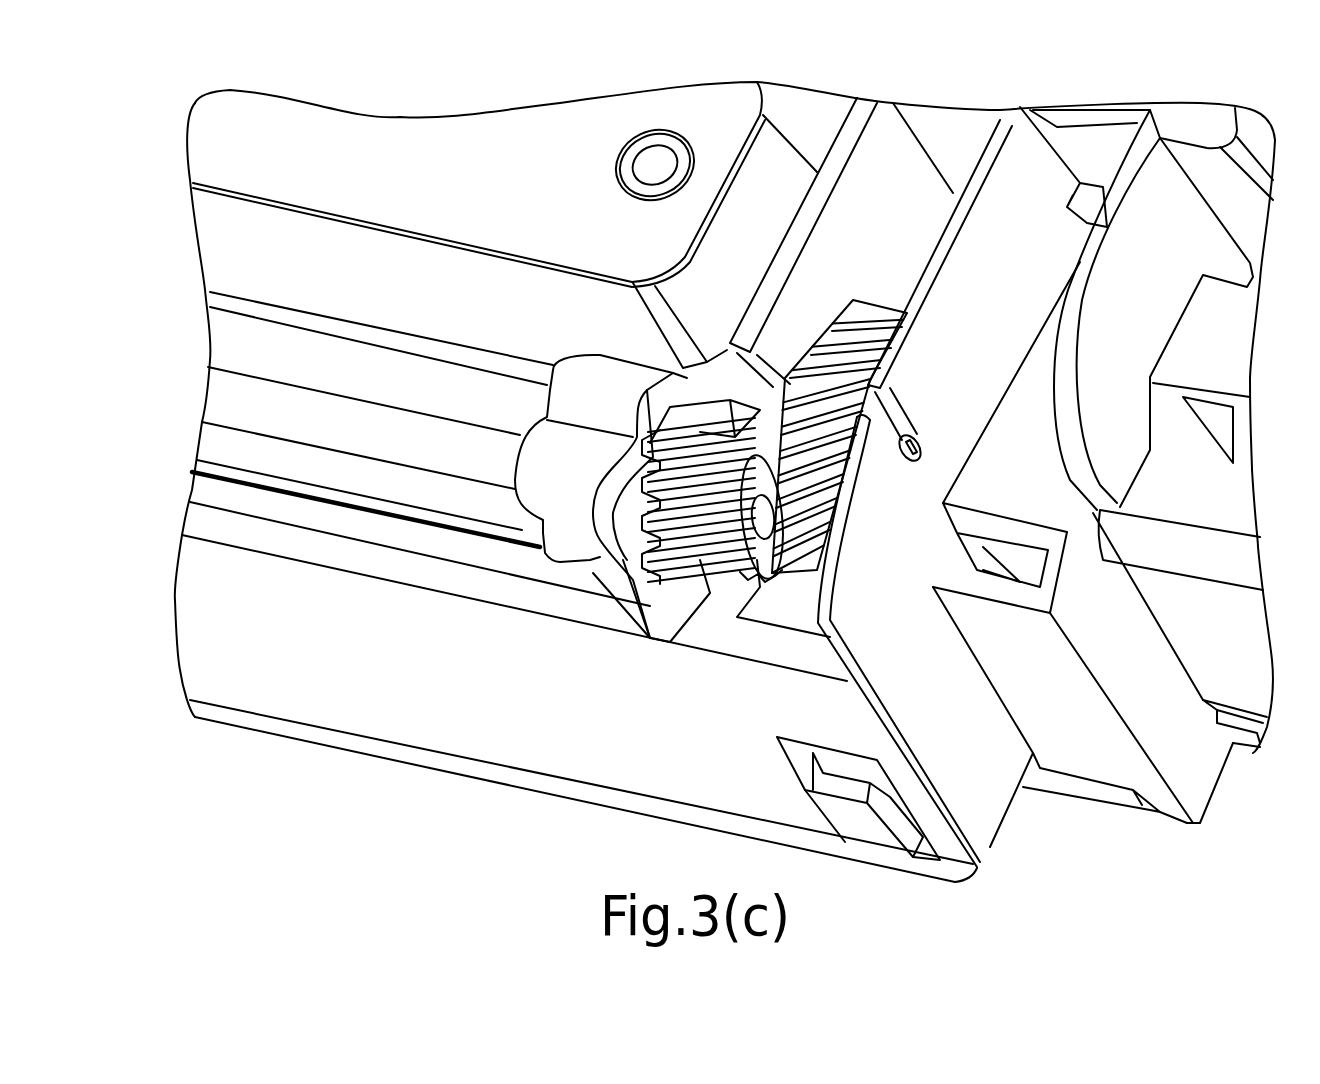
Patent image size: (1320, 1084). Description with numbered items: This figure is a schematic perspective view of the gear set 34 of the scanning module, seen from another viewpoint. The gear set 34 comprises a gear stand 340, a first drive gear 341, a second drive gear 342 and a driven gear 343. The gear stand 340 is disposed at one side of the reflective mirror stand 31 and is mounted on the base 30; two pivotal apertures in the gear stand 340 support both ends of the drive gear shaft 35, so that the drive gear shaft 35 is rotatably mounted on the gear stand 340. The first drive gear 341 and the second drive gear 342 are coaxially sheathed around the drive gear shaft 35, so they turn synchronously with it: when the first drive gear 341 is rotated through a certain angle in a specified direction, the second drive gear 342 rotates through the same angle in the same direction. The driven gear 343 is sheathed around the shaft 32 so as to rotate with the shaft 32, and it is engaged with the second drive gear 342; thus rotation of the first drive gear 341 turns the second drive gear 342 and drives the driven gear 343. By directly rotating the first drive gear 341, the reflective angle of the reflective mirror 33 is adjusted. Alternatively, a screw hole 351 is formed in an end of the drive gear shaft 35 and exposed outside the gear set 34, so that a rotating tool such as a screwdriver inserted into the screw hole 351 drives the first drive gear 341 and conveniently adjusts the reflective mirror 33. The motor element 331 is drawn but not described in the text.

The base 30 is at (422, 138).
The reflective mirror stand 31 is at (663, 603).
The shaft 32 is at (220, 395).
The reflective mirror 33 is at (240, 348).
The gear set 34 is at (803, 333).
The drive gear shaft 35 is at (897, 432).
The motor 331 is at (557, 488).
The gear stand 340 is at (822, 600).
The first drive gear 341 is at (817, 380).
The second drive gear 342 is at (803, 333).
The driven gear 343 is at (690, 520).
The screw hole 351 is at (913, 458).